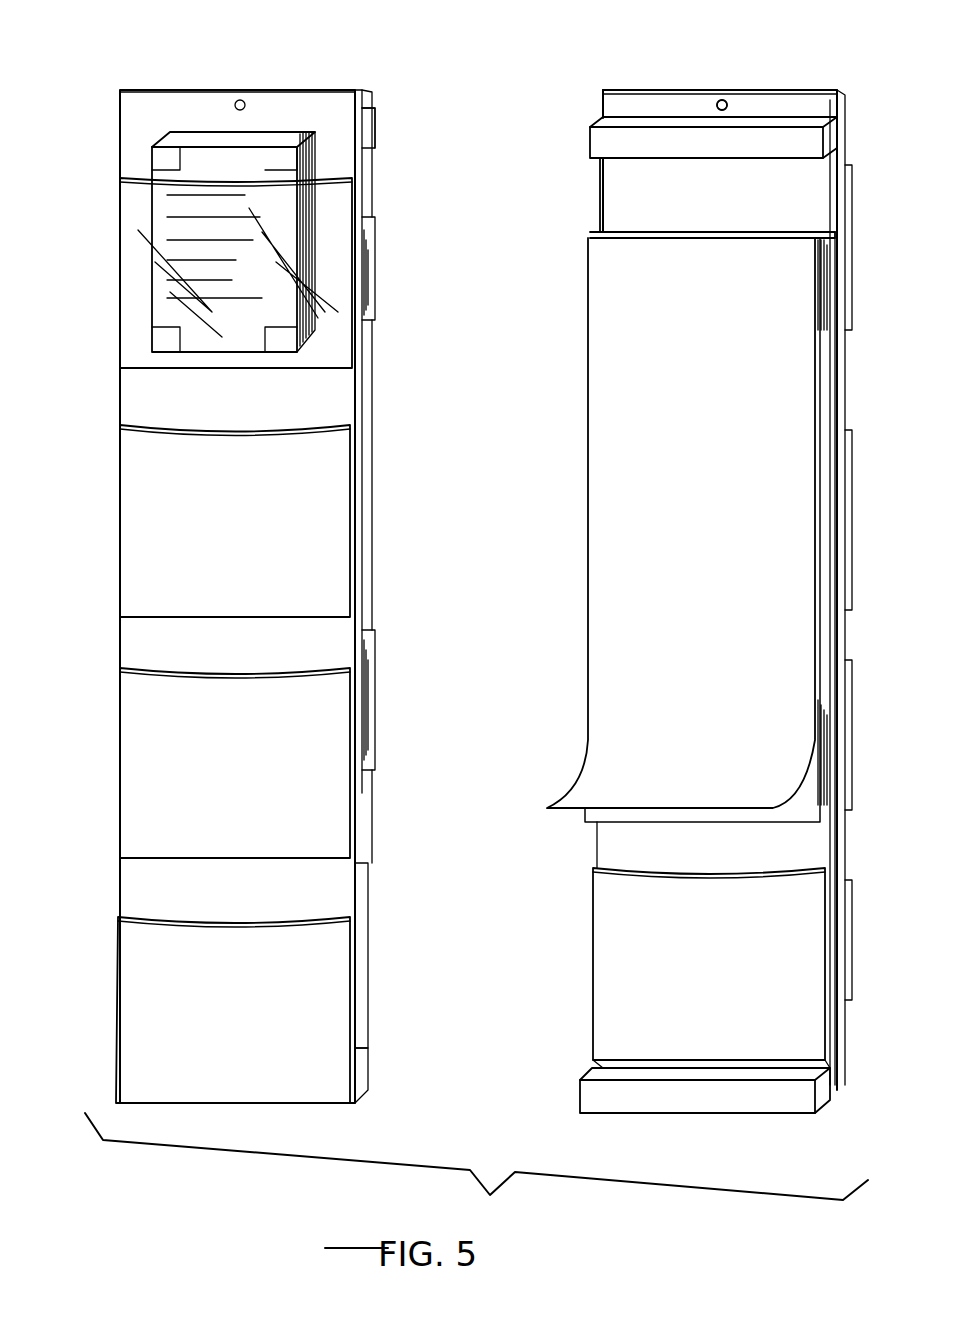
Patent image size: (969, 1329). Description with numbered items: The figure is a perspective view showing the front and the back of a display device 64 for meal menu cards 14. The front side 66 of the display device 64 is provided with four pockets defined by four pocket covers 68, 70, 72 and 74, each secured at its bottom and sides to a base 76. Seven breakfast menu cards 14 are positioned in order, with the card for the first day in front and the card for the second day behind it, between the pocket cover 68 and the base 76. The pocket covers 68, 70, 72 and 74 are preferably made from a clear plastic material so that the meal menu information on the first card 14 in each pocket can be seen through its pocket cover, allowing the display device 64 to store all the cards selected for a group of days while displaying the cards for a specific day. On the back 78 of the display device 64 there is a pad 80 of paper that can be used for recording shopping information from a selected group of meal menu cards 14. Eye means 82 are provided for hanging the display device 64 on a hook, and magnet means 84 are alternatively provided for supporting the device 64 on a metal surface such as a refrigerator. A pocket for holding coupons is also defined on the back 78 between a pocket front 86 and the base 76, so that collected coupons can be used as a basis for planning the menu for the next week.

The meal menu cards 14 is at (318, 168).
The display device 64 is at (340, 85).
The front side 66 is at (150, 105).
The pocket cover 68 is at (135, 165).
The pocket cover 70 is at (140, 428).
The pocket cover 72 is at (142, 675).
The pocket cover 74 is at (140, 908).
The base 76 is at (364, 96).
The back 78 is at (652, 102).
The pad of paper 80 is at (590, 235).
The eye means 82 is at (717, 100).
The magnet means 84 is at (793, 115).
The pocket front 86 is at (610, 872).